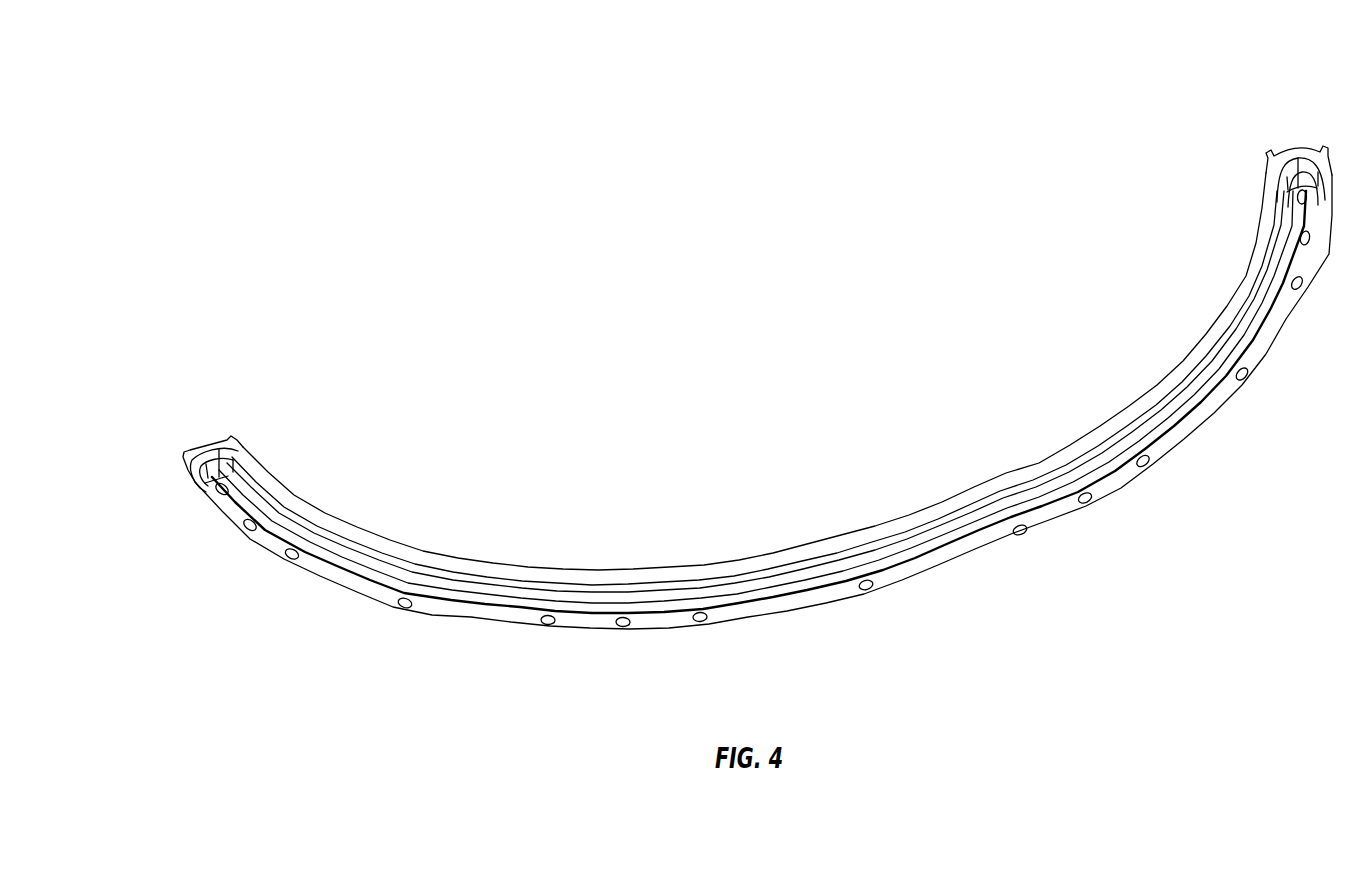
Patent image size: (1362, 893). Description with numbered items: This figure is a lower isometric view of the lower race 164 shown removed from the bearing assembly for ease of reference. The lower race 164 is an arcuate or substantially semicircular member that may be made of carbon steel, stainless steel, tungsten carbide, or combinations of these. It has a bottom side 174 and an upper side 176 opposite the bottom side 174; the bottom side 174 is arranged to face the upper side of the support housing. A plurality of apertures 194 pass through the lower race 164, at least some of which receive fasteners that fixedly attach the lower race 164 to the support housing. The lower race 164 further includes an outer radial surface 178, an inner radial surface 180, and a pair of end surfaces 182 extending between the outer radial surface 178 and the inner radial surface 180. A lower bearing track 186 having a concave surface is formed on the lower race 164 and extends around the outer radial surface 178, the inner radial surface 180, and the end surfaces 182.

The lower race 164 is at (751, 232).
The bottom side 174 is at (1103, 487).
The upper side 176 is at (210, 440).
The outer radial surface 178 is at (185, 458).
The inner radial surface 180 is at (512, 568).
The end surfaces 182 is at (1296, 152).
The lower bearing track 186 is at (967, 526).
The apertures 194 is at (623, 628).